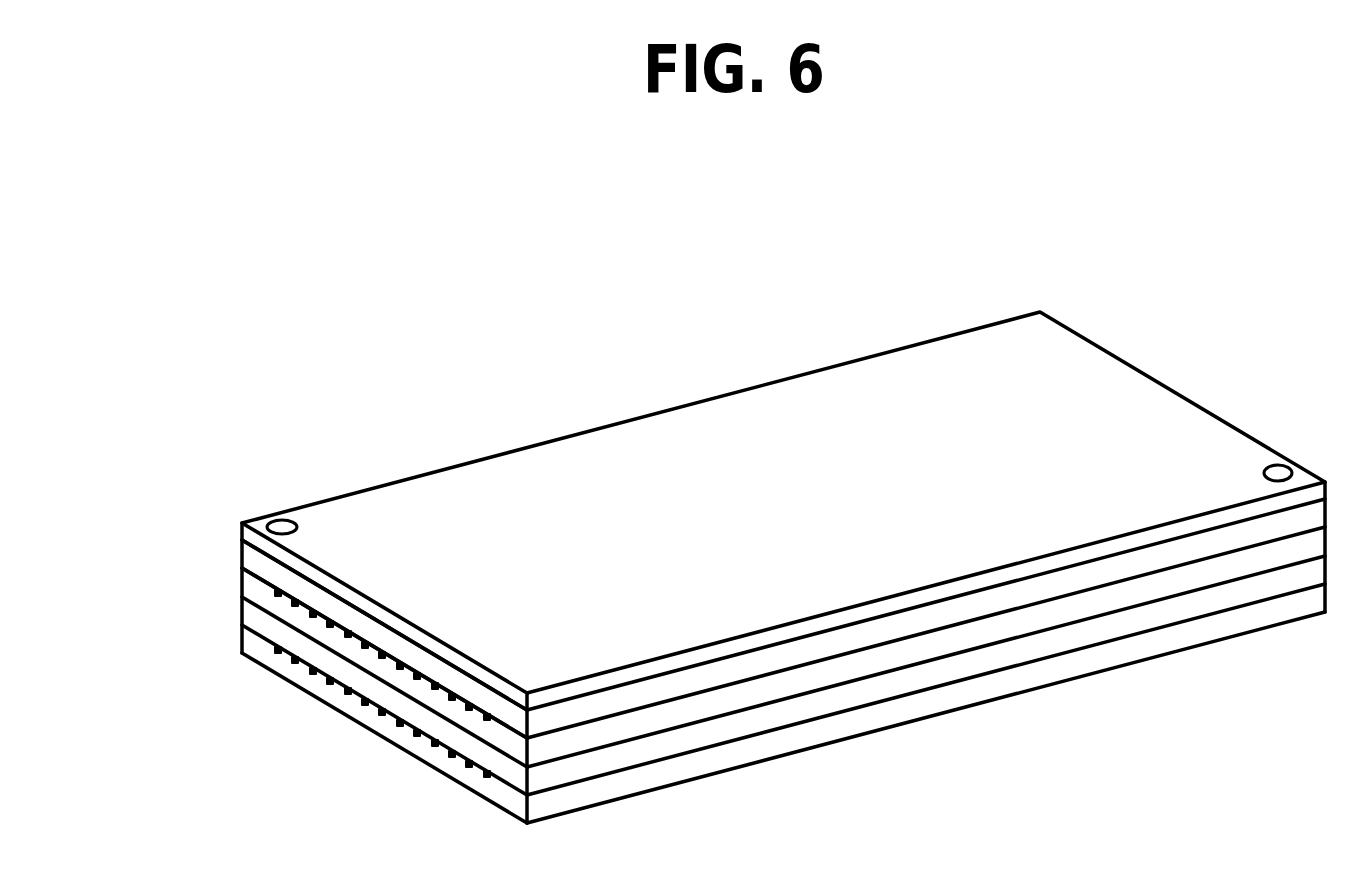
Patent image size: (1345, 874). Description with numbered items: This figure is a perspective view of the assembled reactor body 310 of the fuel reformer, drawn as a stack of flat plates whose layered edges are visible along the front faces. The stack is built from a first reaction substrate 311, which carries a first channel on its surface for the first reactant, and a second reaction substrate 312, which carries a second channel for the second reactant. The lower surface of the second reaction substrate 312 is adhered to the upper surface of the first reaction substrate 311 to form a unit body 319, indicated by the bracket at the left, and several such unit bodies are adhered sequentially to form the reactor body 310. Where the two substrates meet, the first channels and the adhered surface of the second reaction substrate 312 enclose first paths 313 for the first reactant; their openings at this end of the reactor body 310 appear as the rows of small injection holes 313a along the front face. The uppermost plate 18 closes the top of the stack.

The reactor body 310 is at (747, 245).
The top plate 18 is at (455, 471).
The second reaction substrate 312 is at (216, 557).
The first reaction substrate 311 is at (216, 581).
The unit body 319 is at (112, 520).
The first paths 313 is at (284, 605).
The injection holes 313a is at (328, 677).